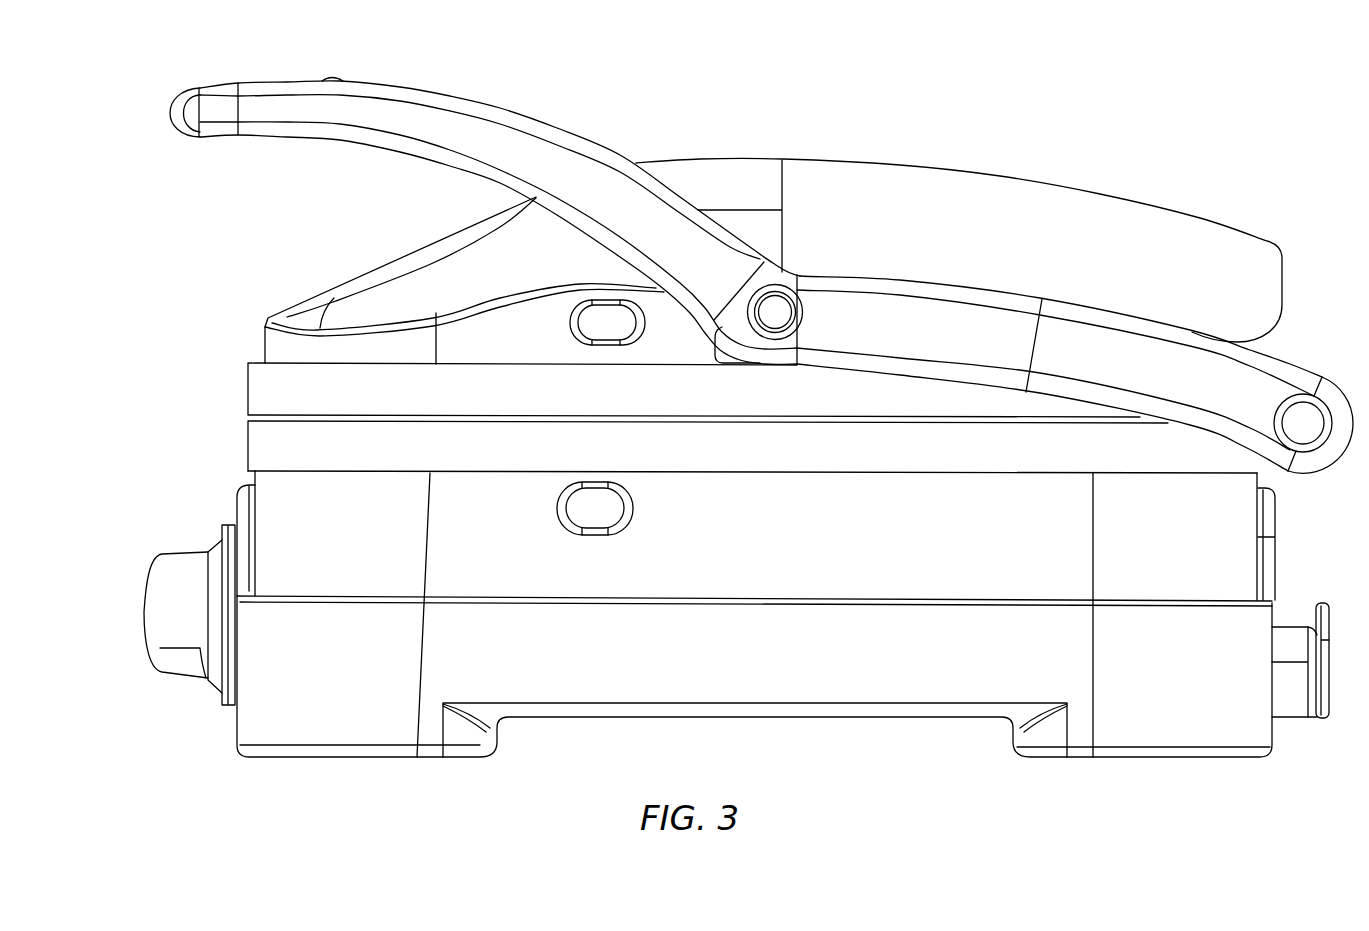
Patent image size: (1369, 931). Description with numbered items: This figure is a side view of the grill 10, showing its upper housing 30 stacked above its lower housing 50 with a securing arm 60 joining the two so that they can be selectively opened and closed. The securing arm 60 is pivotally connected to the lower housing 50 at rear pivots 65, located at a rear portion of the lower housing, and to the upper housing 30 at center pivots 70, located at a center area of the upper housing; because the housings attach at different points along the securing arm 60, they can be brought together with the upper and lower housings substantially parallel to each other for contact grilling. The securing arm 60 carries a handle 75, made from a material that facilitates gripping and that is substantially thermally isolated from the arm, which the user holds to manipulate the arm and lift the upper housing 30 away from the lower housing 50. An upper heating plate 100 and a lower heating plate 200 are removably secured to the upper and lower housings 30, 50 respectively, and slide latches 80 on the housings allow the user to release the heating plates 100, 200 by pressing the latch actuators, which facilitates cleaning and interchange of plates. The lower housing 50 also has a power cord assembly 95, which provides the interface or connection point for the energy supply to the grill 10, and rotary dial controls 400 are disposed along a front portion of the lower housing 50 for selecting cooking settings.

The grill 10 is at (1208, 144).
The upper housing 30 is at (1010, 213).
The lower housing 50 is at (1160, 713).
The securing arm 60 is at (1196, 366).
The rear pivots 65 is at (1305, 423).
The center pivots 70 is at (777, 312).
The handle 75 is at (174, 108).
The slide latches 80 is at (603, 322).
The power cord assembly 95 is at (1283, 653).
The upper heating plate 100 is at (247, 388).
The lower heating plate 200 is at (247, 440).
The rotary dial controls 400 is at (115, 612).